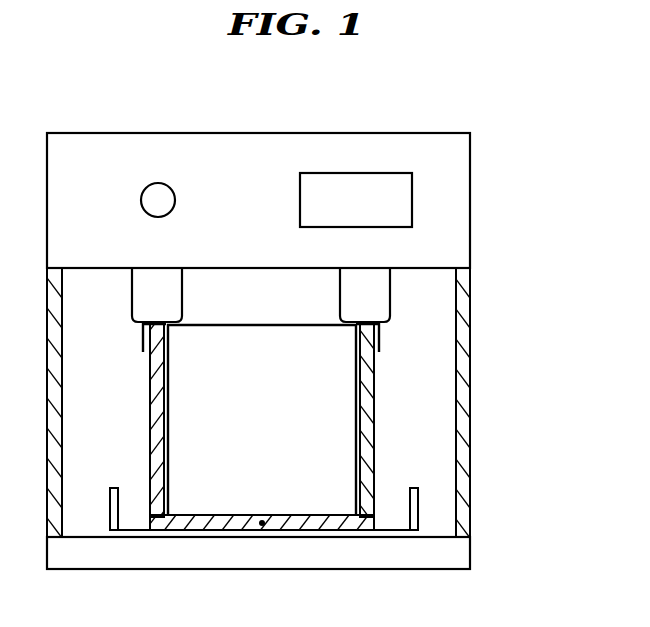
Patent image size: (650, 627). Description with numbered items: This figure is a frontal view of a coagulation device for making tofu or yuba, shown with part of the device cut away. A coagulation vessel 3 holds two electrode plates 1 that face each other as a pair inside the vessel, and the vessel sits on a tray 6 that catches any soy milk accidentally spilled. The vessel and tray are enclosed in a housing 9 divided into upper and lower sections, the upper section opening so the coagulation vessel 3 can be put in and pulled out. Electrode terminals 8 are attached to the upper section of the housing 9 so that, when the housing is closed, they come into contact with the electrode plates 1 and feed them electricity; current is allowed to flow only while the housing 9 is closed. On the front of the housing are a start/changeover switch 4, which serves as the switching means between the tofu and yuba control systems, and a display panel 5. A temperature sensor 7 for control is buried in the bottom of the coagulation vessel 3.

The electrode plate 1 is at (356, 405).
The coagulation vessel 3 is at (150, 432).
The start/changeover switch 4 is at (141, 200).
The display panel 5 is at (412, 195).
The tray 6 is at (398, 538).
The temperature sensor 7 is at (245, 537).
The electrode terminal 8 is at (132, 293).
The housing 9 is at (264, 133).